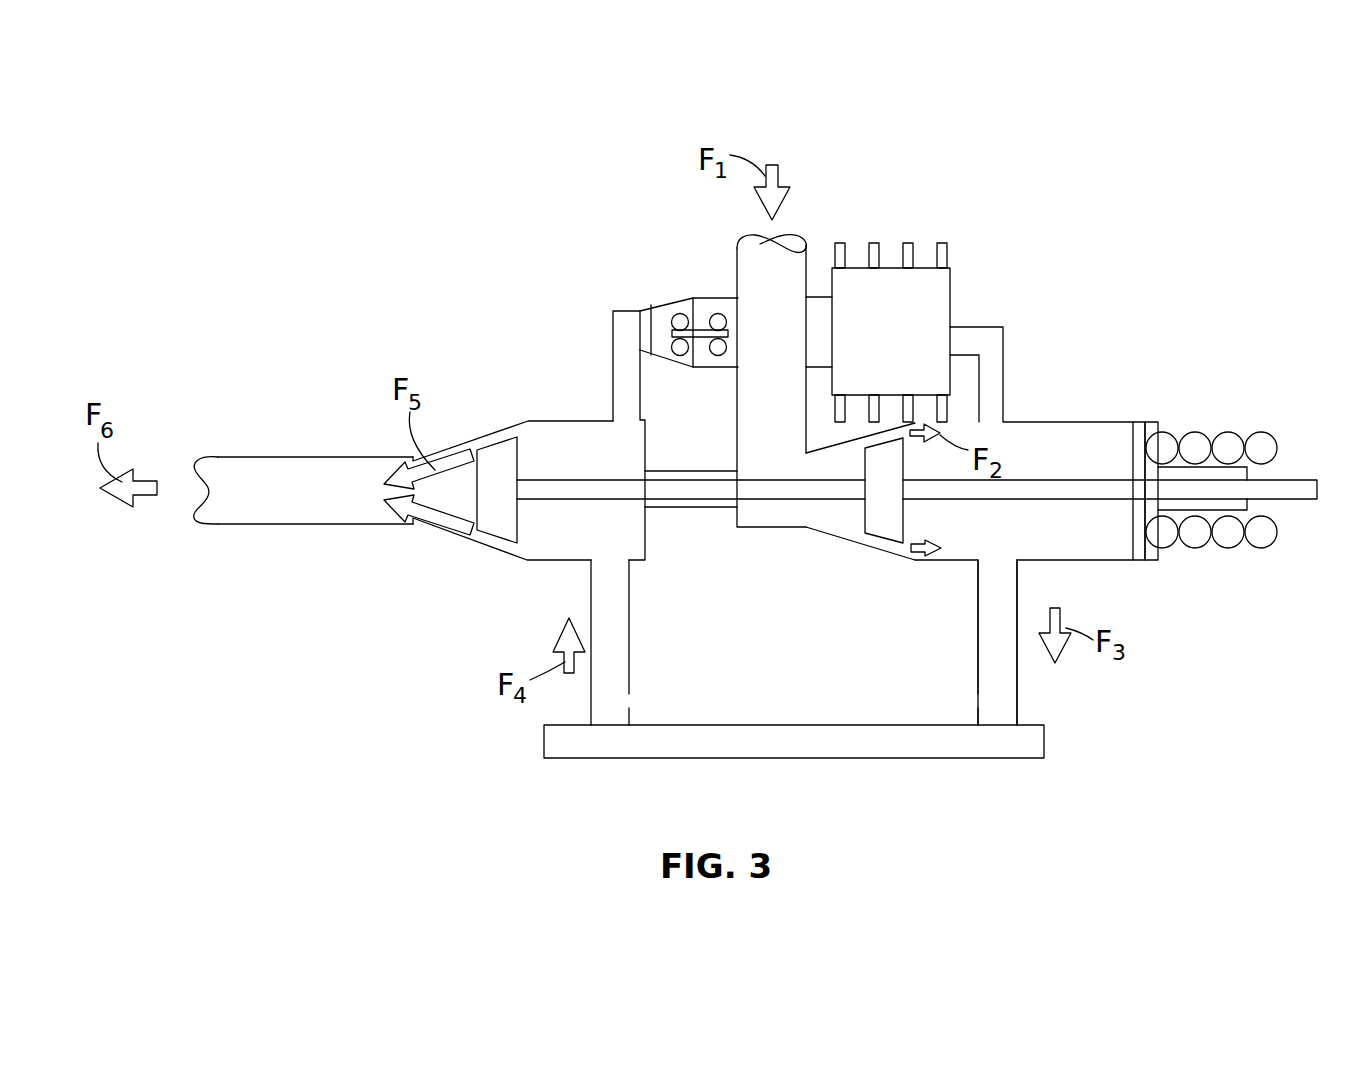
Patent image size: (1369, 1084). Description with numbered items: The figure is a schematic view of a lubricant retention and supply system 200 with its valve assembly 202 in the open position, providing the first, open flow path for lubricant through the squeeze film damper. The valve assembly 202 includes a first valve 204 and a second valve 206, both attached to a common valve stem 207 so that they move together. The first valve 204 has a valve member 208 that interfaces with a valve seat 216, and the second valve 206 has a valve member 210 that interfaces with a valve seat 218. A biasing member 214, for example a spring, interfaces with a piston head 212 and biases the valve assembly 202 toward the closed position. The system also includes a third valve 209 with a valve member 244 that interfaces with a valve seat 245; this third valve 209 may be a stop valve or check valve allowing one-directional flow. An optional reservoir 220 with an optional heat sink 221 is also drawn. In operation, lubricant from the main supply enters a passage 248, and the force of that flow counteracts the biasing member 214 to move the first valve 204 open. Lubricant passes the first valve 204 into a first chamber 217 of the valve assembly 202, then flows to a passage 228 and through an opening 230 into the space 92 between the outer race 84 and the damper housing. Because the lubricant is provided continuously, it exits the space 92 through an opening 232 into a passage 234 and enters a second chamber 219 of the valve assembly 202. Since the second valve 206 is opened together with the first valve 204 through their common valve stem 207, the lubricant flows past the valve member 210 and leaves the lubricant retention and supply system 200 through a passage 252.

The lubricant retention and supply system 200 is at (178, 150).
The passage 252 is at (276, 455).
The valve seat 218 is at (437, 534).
The valve member 210 is at (493, 537).
The second valve 206 is at (494, 420).
The third valve 209 is at (628, 296).
The second chamber 219 is at (557, 545).
The valve member 244 is at (658, 305).
The valve seat 245 is at (656, 357).
The passage 248 is at (808, 266).
The reservoir 220 is at (887, 265).
The heat sink 221 is at (942, 243).
The valve seat 216 is at (857, 542).
The valve member 208 is at (885, 540).
The first valve 204 is at (848, 510).
The first chamber 217 is at (994, 545).
The valve assembly 202 is at (1113, 438).
The valve stem 207 is at (1085, 503).
The piston head 212 is at (1140, 427).
The biasing member 214 is at (1193, 433).
The passage 228 is at (1018, 676).
The opening 230 is at (970, 698).
The opening 232 is at (637, 698).
The passage 234 is at (591, 686).
The space 92 is at (793, 693).
The outer race 84 is at (1033, 743).